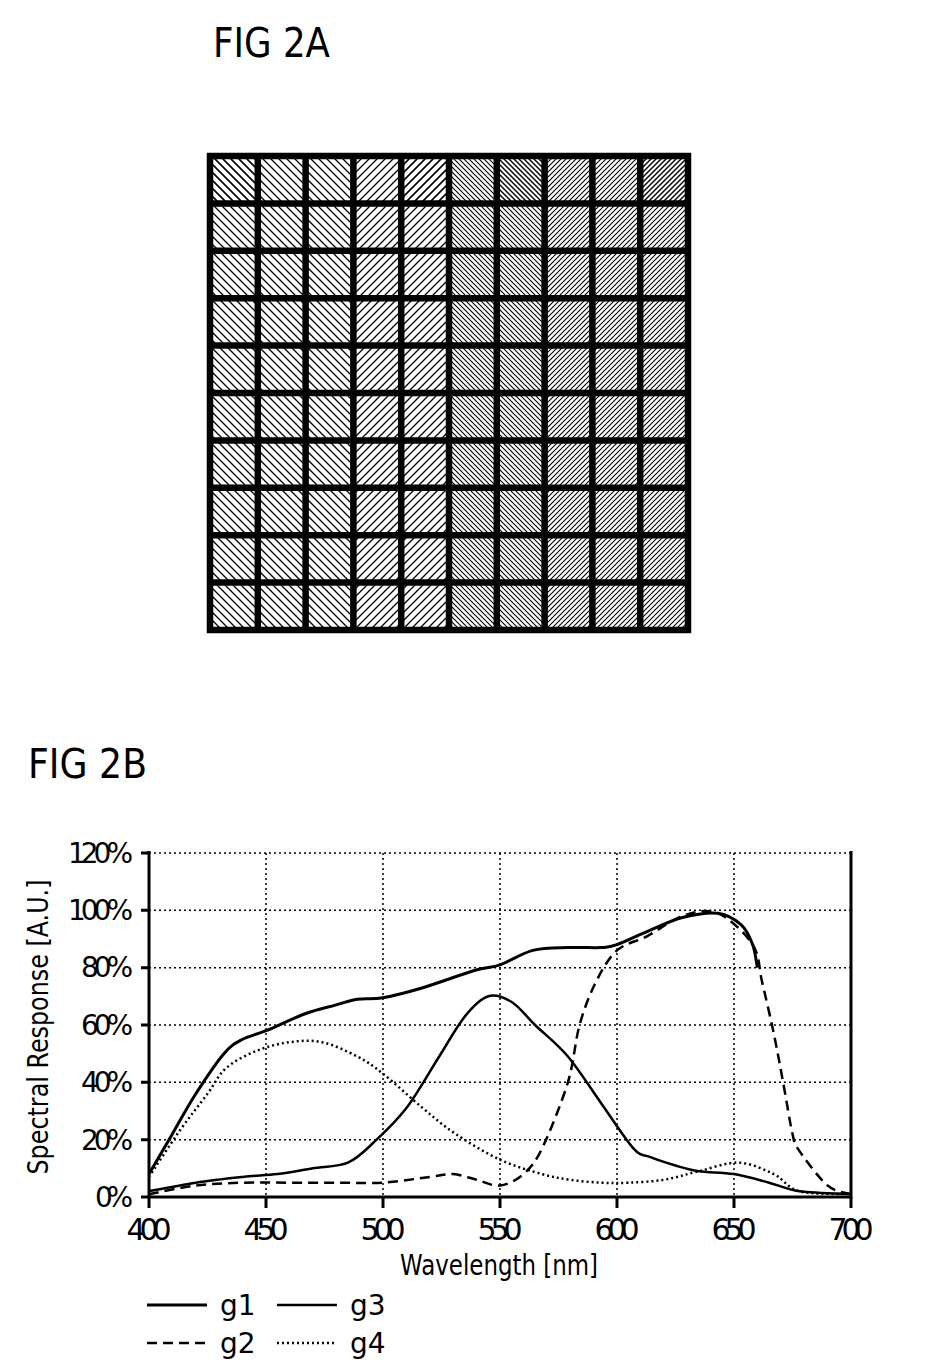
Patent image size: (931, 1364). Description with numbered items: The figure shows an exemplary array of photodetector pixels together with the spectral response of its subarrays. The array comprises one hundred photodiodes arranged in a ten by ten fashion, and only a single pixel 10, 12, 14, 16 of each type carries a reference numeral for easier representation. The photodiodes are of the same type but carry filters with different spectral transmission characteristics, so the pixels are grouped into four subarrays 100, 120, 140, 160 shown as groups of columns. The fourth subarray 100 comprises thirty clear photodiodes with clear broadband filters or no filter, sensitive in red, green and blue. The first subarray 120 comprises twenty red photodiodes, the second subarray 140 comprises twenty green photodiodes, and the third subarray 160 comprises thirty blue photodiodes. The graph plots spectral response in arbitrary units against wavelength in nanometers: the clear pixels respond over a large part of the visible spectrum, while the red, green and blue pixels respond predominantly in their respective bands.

The pixel 10 is at (231, 153).
The pixel 12 is at (424, 153).
The pixel 14 is at (519, 153).
The pixel 16 is at (663, 153).
The fourth subarray 100 is at (281, 391).
The first subarray 120 is at (401, 391).
The second subarray 140 is at (497, 391).
The third subarray 160 is at (616, 391).